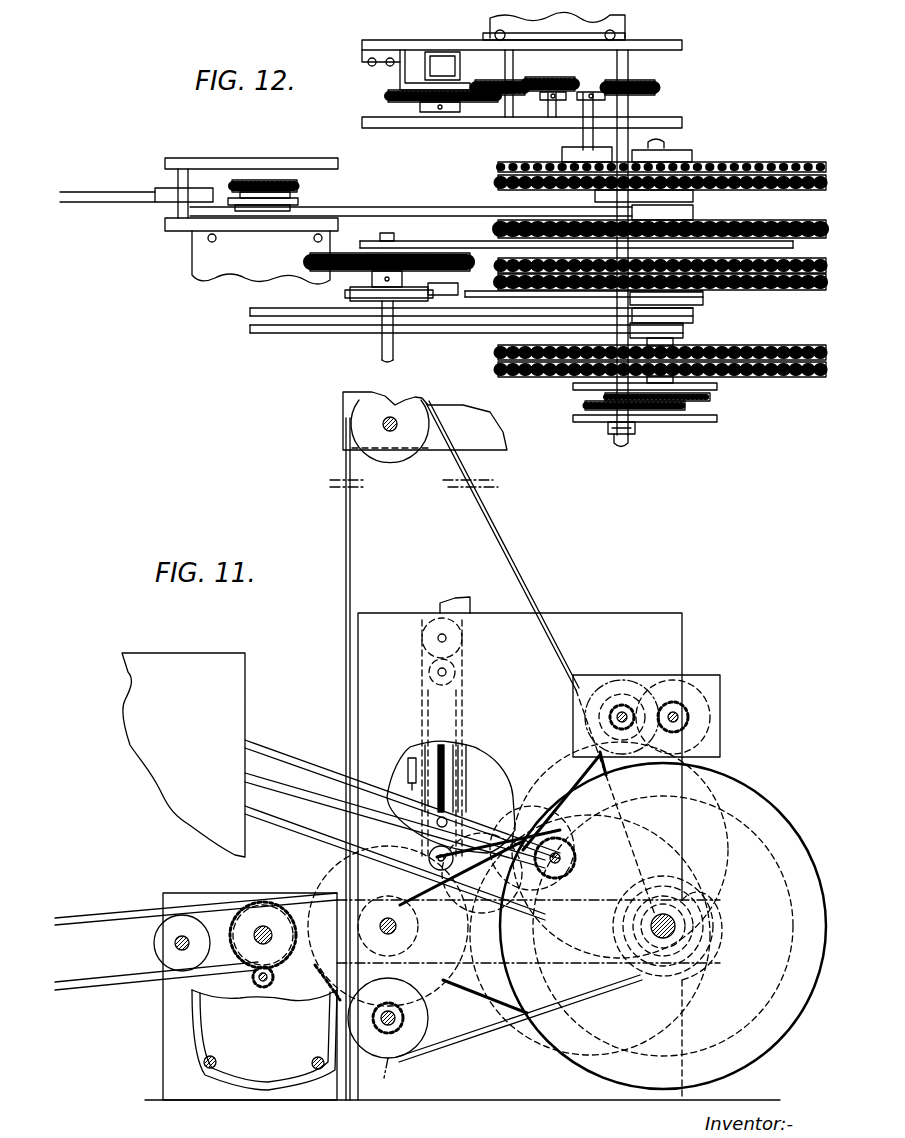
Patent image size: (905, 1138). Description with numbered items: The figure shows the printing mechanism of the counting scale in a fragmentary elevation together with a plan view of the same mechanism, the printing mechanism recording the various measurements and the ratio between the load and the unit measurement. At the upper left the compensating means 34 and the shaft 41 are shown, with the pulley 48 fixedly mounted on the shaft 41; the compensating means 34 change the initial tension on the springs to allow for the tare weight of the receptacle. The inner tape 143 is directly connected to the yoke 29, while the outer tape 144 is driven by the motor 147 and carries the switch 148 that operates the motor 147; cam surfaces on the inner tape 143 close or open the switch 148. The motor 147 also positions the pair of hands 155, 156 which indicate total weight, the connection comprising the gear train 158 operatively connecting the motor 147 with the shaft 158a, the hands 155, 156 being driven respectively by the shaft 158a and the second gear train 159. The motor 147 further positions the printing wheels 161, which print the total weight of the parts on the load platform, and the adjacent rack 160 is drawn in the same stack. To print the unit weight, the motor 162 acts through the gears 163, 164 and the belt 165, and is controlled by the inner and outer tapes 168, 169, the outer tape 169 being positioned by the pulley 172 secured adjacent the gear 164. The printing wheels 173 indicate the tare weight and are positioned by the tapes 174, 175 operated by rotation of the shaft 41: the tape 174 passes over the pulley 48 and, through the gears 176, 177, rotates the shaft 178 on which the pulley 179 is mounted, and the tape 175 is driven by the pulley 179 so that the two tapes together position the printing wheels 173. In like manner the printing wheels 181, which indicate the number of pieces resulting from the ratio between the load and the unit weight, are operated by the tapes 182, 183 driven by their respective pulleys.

In FIG. 11, the yoke 29 is at (483, 770).
In FIG. 11, the compensating means 34 is at (352, 403).
In FIG. 11, the shaft 41 is at (382, 425).
In FIG. 11, the pulley 48 is at (393, 462).
In FIG. 12, the inner tape 143 is at (438, 54).
In FIG. 11, the inner tape 143 is at (455, 783).
In FIG. 12, the outer tape 144 is at (427, 68).
In FIG. 11, the outer tape 144 is at (460, 803).
In FIG. 12, the motor 147 is at (622, 27).
In FIG. 11, the motor 147 is at (474, 995).
In FIG. 11, the switch 148 is at (410, 768).
In FIG. 12, the hand 155 is at (614, 440).
In FIG. 12, the hand 156 is at (608, 428).
In FIG. 12, the gear train 158 is at (676, 70).
In FIG. 12, the shaft 158a is at (615, 141).
In FIG. 11, the shaft 158a is at (607, 717).
In FIG. 12, the second gear train 159 is at (722, 396).
In FIG. 11, the second gear train 159 is at (662, 671).
In FIG. 12, the rack 160 is at (842, 214).
In FIG. 12, the printing wheels 161 is at (824, 172).
In FIG. 12, the motor 162 is at (278, 272).
In FIG. 11, the motor 162 is at (215, 1028).
In FIG. 12, the gear 163 is at (263, 180).
In FIG. 11, the gear 163 is at (274, 980).
In FIG. 12, the gear 164 is at (232, 180).
In FIG. 11, the gear 164 is at (240, 912).
In FIG. 12, the belt 165 is at (428, 208).
In FIG. 11, the belt 165 is at (312, 910).
In FIG. 11, the inner tape 168 is at (120, 925).
In FIG. 12, the outer tape 169 is at (117, 192).
In FIG. 11, the outer tape 169 is at (118, 916).
In FIG. 11, the pulley 172 is at (260, 905).
In FIG. 12, the printing wheels 173 is at (822, 272).
In FIG. 12, the tape 174 is at (482, 300).
In FIG. 11, the tape 174 is at (520, 583).
In FIG. 12, the tape 175 is at (468, 244).
In FIG. 11, the tape 175 is at (486, 1000).
In FIG. 12, the gear 176 is at (452, 289).
In FIG. 11, the gear 176 is at (388, 1030).
In FIG. 12, the gear 177 is at (311, 271).
In FIG. 11, the gear 177 is at (325, 985).
In FIG. 12, the shaft 178 is at (380, 347).
In FIG. 11, the shaft 178 is at (396, 926).
In FIG. 12, the pulley 179 is at (355, 288).
In FIG. 11, the pulley 179 is at (410, 942).
In FIG. 12, the printing wheels 181 is at (828, 375).
In FIG. 11, the printing wheels 181 is at (755, 822).
In FIG. 12, the tape 182 is at (290, 333).
In FIG. 11, the tape 182 is at (266, 820).
In FIG. 12, the tape 183 is at (250, 312).
In FIG. 11, the tape 183 is at (297, 742).